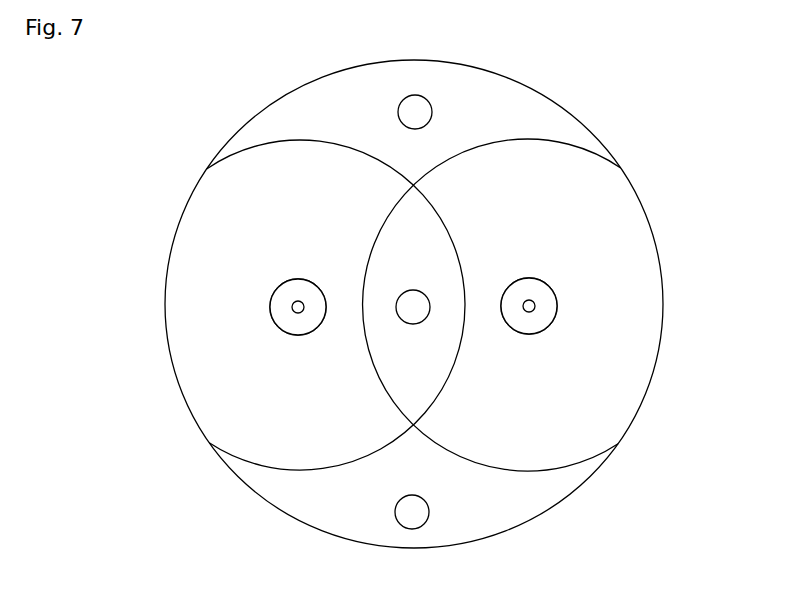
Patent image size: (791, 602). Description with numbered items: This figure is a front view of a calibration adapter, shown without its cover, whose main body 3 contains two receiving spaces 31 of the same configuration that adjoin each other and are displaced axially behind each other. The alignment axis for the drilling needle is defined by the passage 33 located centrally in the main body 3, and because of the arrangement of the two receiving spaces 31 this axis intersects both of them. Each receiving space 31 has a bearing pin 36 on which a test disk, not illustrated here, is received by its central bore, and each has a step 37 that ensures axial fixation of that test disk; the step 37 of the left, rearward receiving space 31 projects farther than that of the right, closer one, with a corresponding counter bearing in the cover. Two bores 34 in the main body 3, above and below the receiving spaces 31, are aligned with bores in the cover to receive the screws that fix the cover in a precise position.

The main body 3 is at (329, 86).
The receiving space 31 is at (184, 248).
The passage 33 is at (412, 304).
The bores 34 is at (421, 104).
The bearing pin 36 is at (298, 307).
The step 37 is at (299, 326).